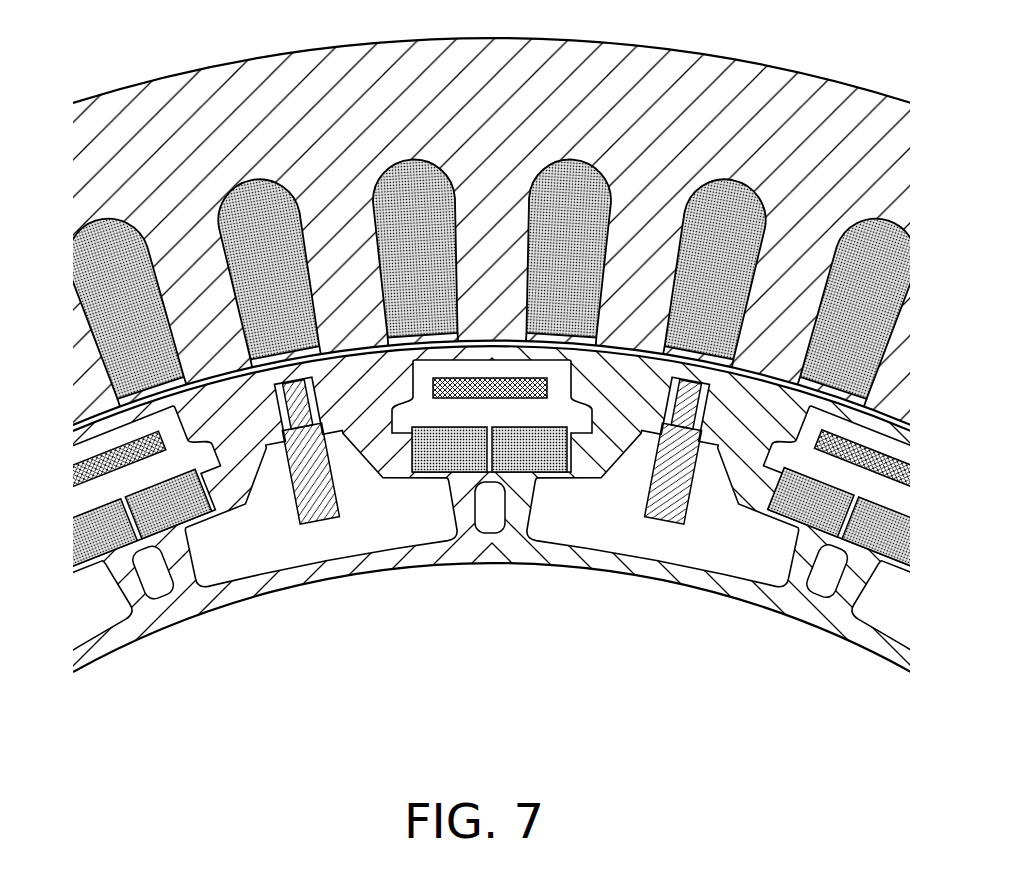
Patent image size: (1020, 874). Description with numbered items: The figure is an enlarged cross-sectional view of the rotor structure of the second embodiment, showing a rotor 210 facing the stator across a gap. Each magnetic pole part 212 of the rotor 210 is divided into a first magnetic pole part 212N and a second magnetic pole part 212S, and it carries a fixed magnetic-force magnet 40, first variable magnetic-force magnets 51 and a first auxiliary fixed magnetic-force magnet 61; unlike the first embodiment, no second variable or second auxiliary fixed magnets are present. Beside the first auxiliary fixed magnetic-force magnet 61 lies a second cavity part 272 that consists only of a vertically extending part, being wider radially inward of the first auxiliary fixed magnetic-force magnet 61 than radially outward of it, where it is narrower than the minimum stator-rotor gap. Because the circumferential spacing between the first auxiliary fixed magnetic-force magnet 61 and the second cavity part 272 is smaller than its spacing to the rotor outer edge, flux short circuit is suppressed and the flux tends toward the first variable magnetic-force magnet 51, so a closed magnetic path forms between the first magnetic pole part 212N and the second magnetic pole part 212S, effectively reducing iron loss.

The rotor 210 is at (345, 568).
The magnetic pole part 212 is at (492, 543).
The first magnetic pole part 212N is at (512, 574).
The second magnetic pole part 212S is at (199, 630).
The second cavity part 272 is at (411, 417).
The first variable magnetic-force magnet 51 is at (292, 380).
The first auxiliary fixed magnetic-force magnet 61 is at (82, 443).
The fixed magnetic-force magnet 40 is at (494, 505).